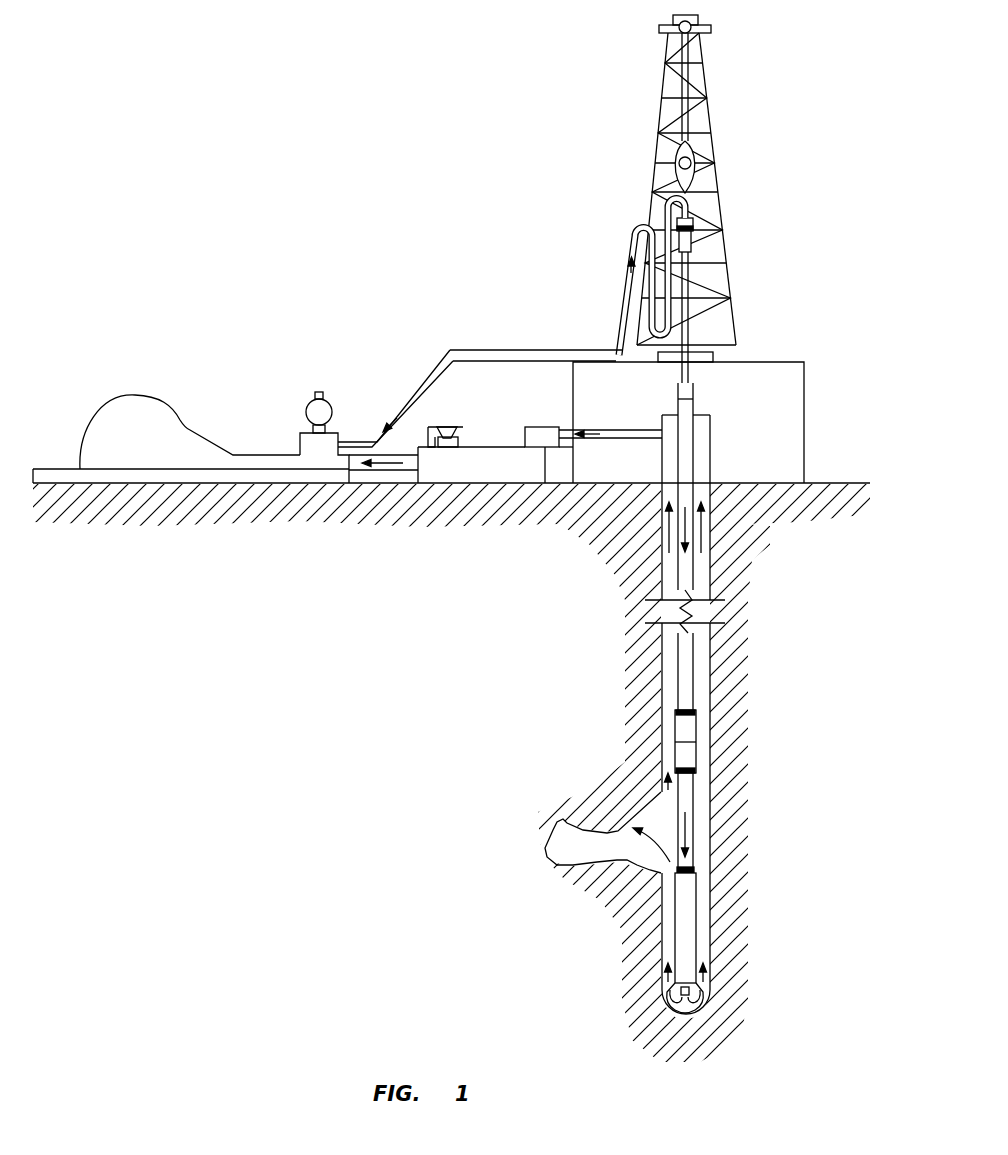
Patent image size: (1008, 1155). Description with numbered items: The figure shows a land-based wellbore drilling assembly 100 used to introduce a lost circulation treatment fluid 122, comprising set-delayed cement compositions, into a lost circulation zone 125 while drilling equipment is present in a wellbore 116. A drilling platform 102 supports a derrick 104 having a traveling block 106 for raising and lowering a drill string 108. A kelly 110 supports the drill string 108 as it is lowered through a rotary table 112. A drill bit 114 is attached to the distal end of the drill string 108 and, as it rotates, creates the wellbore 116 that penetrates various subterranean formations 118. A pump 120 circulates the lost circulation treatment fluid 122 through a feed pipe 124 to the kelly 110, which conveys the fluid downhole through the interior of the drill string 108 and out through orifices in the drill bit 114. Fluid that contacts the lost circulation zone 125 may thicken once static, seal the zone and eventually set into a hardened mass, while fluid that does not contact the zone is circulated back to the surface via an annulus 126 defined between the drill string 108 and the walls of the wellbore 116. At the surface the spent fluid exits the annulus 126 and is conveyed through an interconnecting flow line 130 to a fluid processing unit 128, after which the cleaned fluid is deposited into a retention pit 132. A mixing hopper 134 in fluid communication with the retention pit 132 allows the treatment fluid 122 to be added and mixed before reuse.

The wellbore drilling assembly 100 is at (417, 94).
The drilling platform 102 is at (805, 373).
The derrick 104 is at (709, 113).
The traveling block 106 is at (697, 153).
The drill string 108 is at (689, 582).
The kelly 110 is at (689, 273).
The rotary table 112 is at (713, 357).
The drill bit 114 is at (705, 995).
The wellbore 116 is at (712, 673).
The subterranean formations 118 is at (556, 703).
The pump 120 is at (149, 449).
The lost circulation treatment fluid 122 is at (365, 441).
The feed pipe 124 is at (464, 350).
The lost circulation zone 125 is at (613, 880).
The annulus 126 is at (708, 828).
The fluid processing unit 128 is at (543, 427).
The interconnecting flow line 130 is at (642, 439).
The retention pit 132 is at (520, 471).
The mixing hopper 134 is at (433, 448).